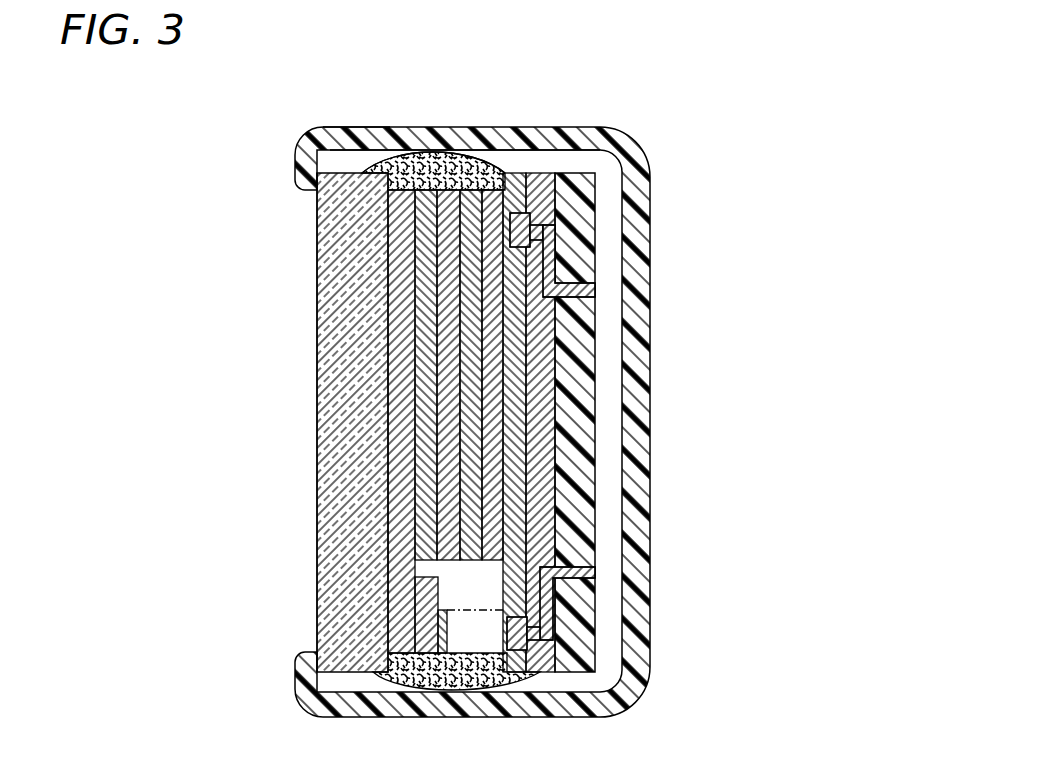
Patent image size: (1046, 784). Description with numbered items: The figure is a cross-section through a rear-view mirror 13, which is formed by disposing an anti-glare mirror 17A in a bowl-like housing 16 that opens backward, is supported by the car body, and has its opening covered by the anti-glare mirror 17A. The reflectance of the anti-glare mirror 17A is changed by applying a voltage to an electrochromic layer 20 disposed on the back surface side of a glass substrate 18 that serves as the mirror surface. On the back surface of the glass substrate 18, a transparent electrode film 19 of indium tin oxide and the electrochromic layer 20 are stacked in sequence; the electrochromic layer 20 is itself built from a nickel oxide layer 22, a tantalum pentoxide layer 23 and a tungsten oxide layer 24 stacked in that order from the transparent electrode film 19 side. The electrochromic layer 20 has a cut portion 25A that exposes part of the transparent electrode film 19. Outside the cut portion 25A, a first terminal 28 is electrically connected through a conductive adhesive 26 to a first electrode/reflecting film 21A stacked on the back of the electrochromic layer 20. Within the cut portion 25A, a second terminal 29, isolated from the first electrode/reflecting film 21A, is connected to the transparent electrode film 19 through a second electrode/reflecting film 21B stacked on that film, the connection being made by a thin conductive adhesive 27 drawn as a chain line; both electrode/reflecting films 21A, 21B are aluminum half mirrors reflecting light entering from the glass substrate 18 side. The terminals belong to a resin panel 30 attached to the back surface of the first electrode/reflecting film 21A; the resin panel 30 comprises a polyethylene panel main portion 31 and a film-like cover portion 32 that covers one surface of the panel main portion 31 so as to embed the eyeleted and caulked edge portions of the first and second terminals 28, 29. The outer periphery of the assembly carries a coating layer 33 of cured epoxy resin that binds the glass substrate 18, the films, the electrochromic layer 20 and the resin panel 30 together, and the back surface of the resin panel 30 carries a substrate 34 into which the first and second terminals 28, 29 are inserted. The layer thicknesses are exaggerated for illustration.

The rear-view mirror 13 is at (306, 130).
The coating layer 33 is at (347, 128).
The housing 16 is at (373, 127).
The nickel oxide layer 22 is at (425, 152).
The tantalum pentoxide layer 23 is at (462, 178).
The tungsten oxide layer 24 is at (492, 178).
The first electrode/reflecting film 21A is at (532, 162).
The first terminal 28 is at (553, 212).
The conductive adhesive 26 is at (549, 268).
The electrochromic layer 20 is at (410, 243).
The transparent electrode film 19 is at (407, 347).
The glass substrate 18 is at (350, 423).
The anti-glare mirror 17A is at (311, 500).
The cut portion 25A is at (455, 562).
The cover portion 32 is at (530, 389).
The resin panel 30 is at (557, 483).
The panel main portion 31 is at (545, 528).
The substrate 34 is at (580, 554).
The second electrode/reflecting film 21B is at (425, 635).
The conductive adhesive 27 is at (448, 632).
The second terminal 29 is at (547, 633).